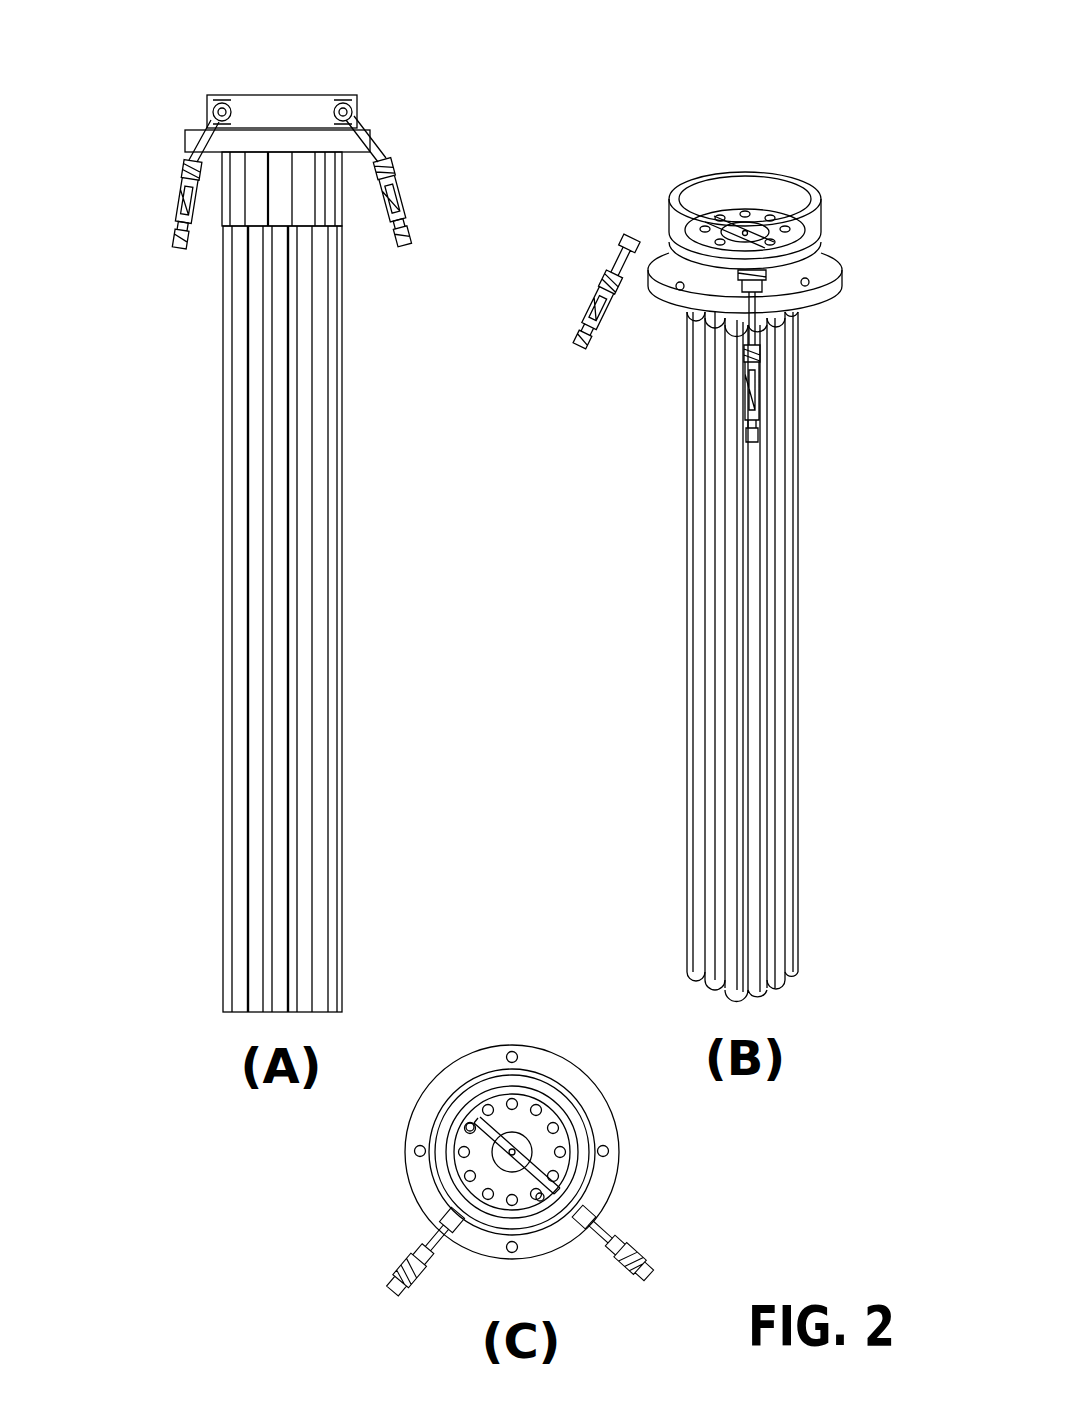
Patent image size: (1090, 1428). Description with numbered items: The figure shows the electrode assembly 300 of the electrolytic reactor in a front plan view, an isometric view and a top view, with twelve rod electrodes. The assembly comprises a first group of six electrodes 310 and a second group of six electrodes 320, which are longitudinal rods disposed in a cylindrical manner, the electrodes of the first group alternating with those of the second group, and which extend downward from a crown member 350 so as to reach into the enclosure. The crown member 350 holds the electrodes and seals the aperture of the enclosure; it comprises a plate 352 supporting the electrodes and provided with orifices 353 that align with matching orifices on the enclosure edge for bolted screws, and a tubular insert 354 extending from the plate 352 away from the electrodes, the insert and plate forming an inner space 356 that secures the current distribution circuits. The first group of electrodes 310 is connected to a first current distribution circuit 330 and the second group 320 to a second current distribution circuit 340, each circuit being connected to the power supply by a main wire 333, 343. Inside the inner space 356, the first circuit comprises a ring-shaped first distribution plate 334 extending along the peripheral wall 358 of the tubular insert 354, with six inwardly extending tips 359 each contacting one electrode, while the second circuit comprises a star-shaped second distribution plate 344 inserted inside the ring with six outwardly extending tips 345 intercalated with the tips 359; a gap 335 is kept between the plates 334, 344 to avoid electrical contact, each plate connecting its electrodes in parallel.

The electrode assembly 300 is at (438, 138).
The first group of N electrodes 310 is at (320, 590).
The second group of N electrodes 320 is at (305, 683).
The first current distribution circuit 330 is at (180, 164).
The main wire 333 is at (181, 246).
The first distribution plate 334 is at (482, 1090).
The gap 335 is at (570, 1170).
The second current distribution circuit 340 is at (378, 214).
The main wire 343 is at (412, 243).
The second distribution plate 344 is at (478, 1148).
The tips of the second plate 345 is at (466, 1125).
The crown member 350 is at (658, 303).
The plate 352 is at (845, 235).
The orifices 353 is at (808, 284).
The tubular insert 354 is at (768, 172).
The inner space 356 is at (727, 192).
The peripheral wall 358 is at (686, 195).
The tips of the first plate 359 is at (542, 1202).